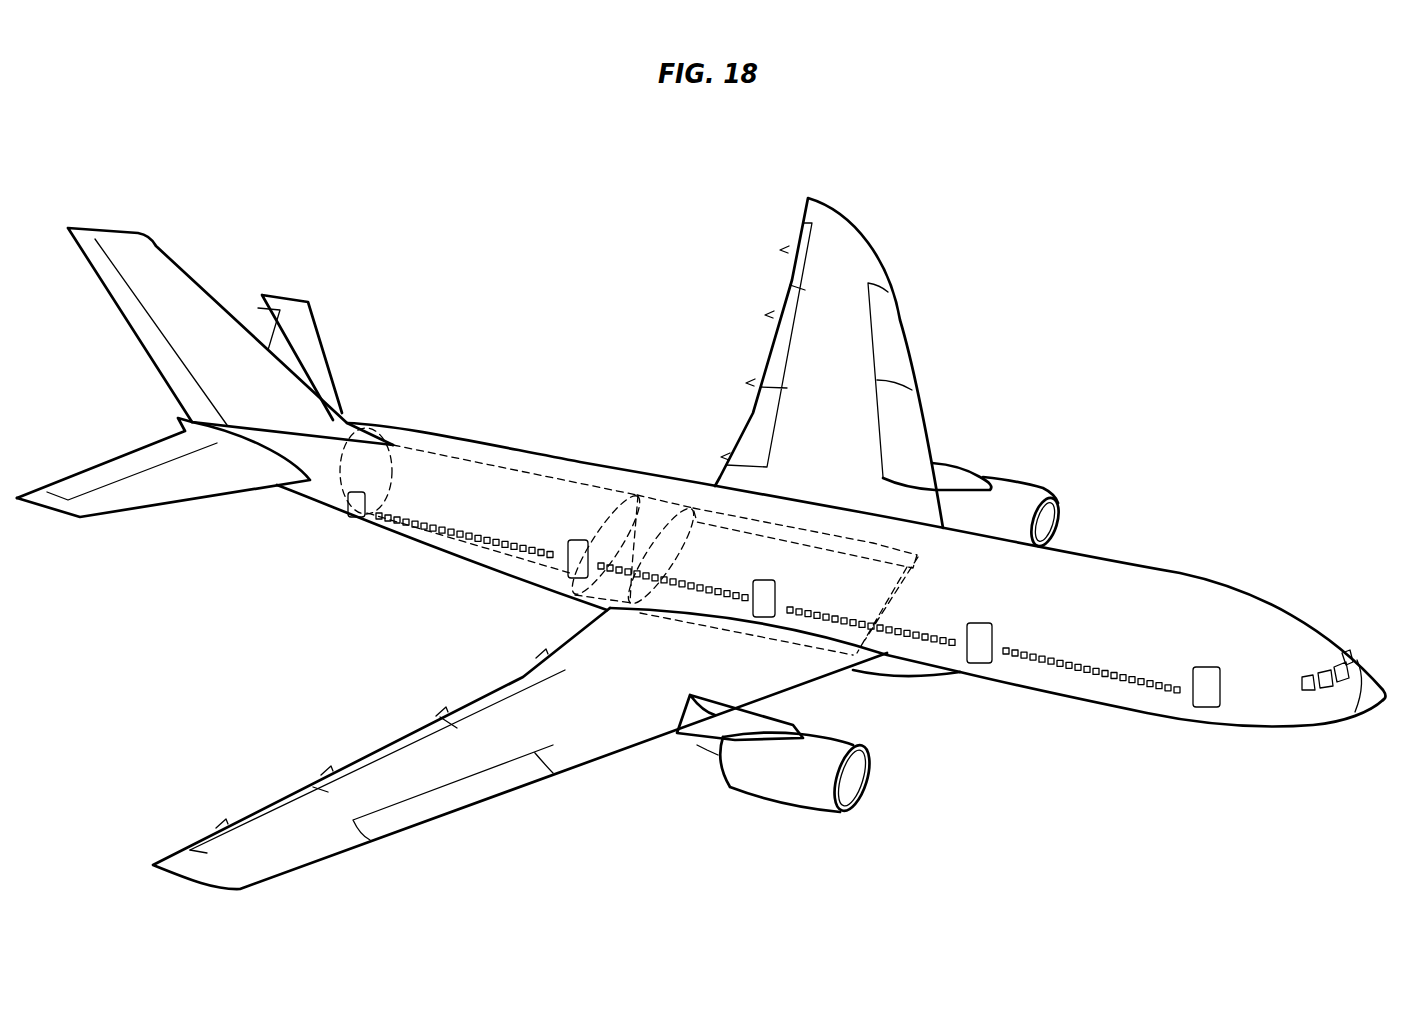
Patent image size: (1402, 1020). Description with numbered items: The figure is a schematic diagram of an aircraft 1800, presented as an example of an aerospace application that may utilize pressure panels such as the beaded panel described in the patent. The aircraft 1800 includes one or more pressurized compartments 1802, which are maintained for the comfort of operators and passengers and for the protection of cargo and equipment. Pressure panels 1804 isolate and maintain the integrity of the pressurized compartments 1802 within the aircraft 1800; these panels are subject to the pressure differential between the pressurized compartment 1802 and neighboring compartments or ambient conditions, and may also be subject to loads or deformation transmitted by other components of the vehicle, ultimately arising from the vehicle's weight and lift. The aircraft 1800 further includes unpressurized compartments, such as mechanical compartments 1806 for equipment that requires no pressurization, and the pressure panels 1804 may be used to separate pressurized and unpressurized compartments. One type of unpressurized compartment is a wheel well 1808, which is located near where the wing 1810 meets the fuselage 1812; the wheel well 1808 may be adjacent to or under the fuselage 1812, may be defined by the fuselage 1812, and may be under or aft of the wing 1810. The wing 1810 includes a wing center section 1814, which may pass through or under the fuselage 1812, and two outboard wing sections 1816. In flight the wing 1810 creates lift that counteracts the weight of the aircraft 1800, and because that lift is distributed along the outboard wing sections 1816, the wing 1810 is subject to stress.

The aircraft 1800 is at (404, 170).
The pressurized compartment 1802 is at (1185, 600).
The pressure panel 1804 is at (540, 327).
The mechanical compartment 1806 is at (618, 497).
The wheel well 1808 is at (613, 527).
The wing 1810 is at (597, 773).
The fuselage 1812 is at (1098, 555).
The wing center section 1814 is at (875, 543).
The outboard wing section 1816 is at (878, 240).